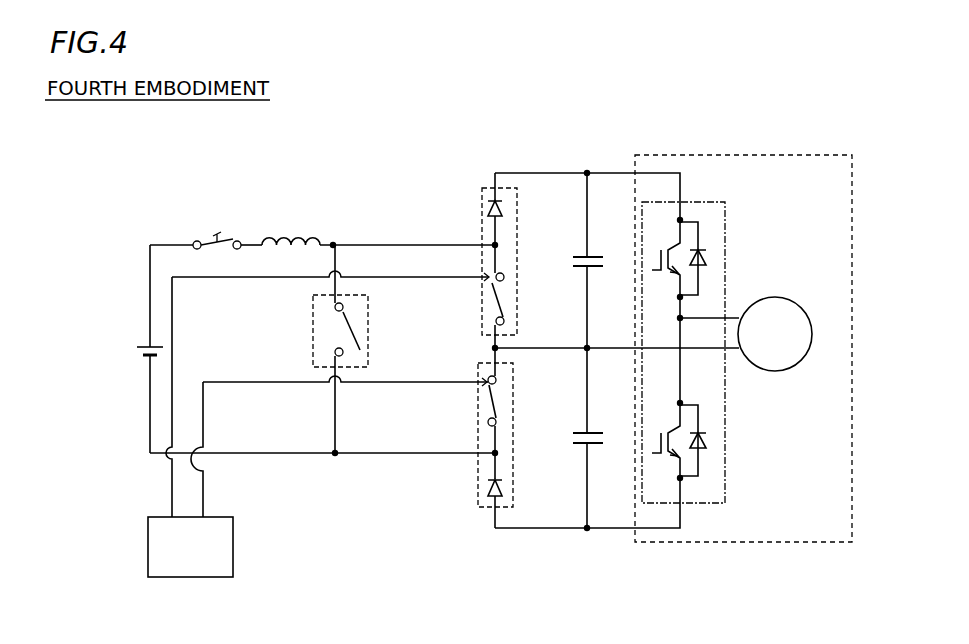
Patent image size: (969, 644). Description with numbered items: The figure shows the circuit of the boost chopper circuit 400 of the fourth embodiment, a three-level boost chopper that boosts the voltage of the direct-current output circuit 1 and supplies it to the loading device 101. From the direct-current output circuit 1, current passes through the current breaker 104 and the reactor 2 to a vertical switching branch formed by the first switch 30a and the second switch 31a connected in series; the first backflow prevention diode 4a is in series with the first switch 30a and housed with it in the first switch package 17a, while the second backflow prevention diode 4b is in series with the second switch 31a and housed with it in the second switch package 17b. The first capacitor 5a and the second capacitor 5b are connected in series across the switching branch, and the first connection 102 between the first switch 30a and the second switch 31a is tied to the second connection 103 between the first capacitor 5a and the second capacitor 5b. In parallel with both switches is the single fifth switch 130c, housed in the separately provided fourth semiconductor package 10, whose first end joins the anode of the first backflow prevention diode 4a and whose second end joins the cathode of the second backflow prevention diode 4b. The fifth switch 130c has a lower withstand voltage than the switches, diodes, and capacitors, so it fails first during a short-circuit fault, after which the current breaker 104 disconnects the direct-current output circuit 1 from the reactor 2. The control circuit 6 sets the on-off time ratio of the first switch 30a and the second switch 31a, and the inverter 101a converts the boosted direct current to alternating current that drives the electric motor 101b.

The boost chopper circuit 400 is at (124, 186).
The current breaker 104 is at (198, 239).
The reactor 2 is at (298, 239).
The direct-current output circuit 1 is at (135, 345).
The fourth semiconductor package 10 is at (312, 312).
The fifth switch 130c is at (343, 315).
The control circuit 6 is at (148, 545).
The first switch package 17a is at (486, 188).
The first backflow prevention diode 4a is at (487, 208).
The first switch 30a is at (498, 300).
The first capacitor 5a is at (580, 256).
The first connection 102 is at (492, 349).
The second connection 103 is at (585, 347).
The second switch package 17b is at (483, 508).
The second switch 31a is at (481, 407).
The second backflow prevention diode 4b is at (487, 487).
The second capacitor 5b is at (585, 447).
The loading device 101 is at (734, 156).
The inverter 101a is at (726, 226).
The electric motor 101b is at (781, 292).